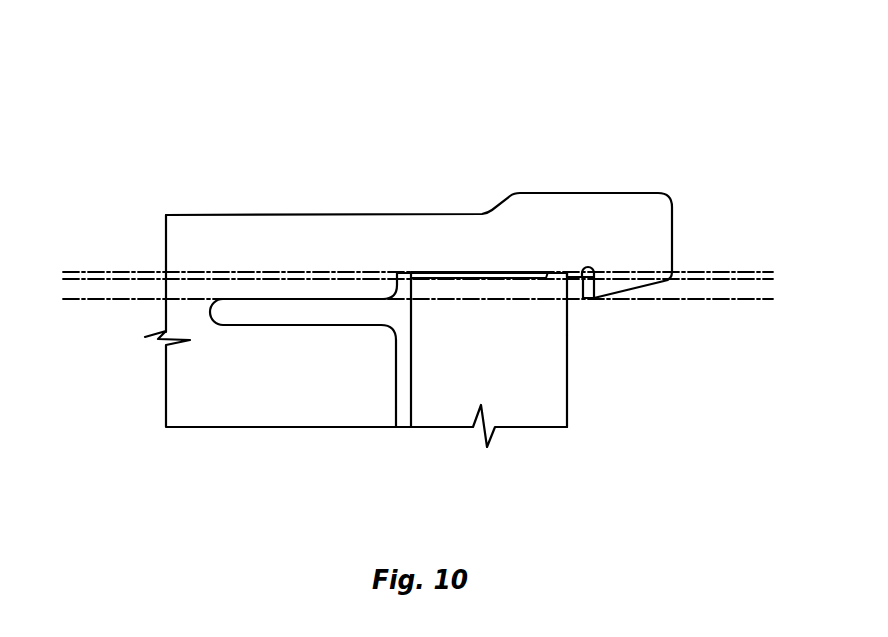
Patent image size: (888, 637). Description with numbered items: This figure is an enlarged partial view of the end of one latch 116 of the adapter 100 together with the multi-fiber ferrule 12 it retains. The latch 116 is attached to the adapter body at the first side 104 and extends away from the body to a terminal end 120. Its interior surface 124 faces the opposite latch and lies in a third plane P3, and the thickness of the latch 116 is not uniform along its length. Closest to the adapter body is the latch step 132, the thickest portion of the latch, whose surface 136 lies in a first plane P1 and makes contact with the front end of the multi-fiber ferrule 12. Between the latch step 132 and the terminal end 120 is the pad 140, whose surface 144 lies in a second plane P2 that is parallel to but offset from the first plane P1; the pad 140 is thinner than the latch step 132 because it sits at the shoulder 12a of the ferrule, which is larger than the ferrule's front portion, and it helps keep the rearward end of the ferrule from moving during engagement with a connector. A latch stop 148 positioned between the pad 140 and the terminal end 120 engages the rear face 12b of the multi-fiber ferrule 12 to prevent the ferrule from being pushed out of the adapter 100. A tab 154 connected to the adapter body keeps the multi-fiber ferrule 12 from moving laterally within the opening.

The adapter 100 is at (549, 91).
The first side 104 is at (668, 92).
The latch 116 is at (460, 213).
The terminal end 120 is at (672, 233).
The interior surface 124 is at (562, 272).
The surface 136 is at (348, 296).
The latch step 132 is at (267, 287).
The pad 140 is at (500, 268).
The surface 144 is at (517, 281).
The latch stop 148 is at (580, 296).
The multi-fiber ferrule 12 is at (403, 417).
The shoulder 12a is at (560, 398).
The rear face 12b is at (568, 327).
The tab 154 is at (353, 400).
The first plane P1 is at (757, 300).
The second plane P2 is at (762, 279).
The third plane P3 is at (742, 272).